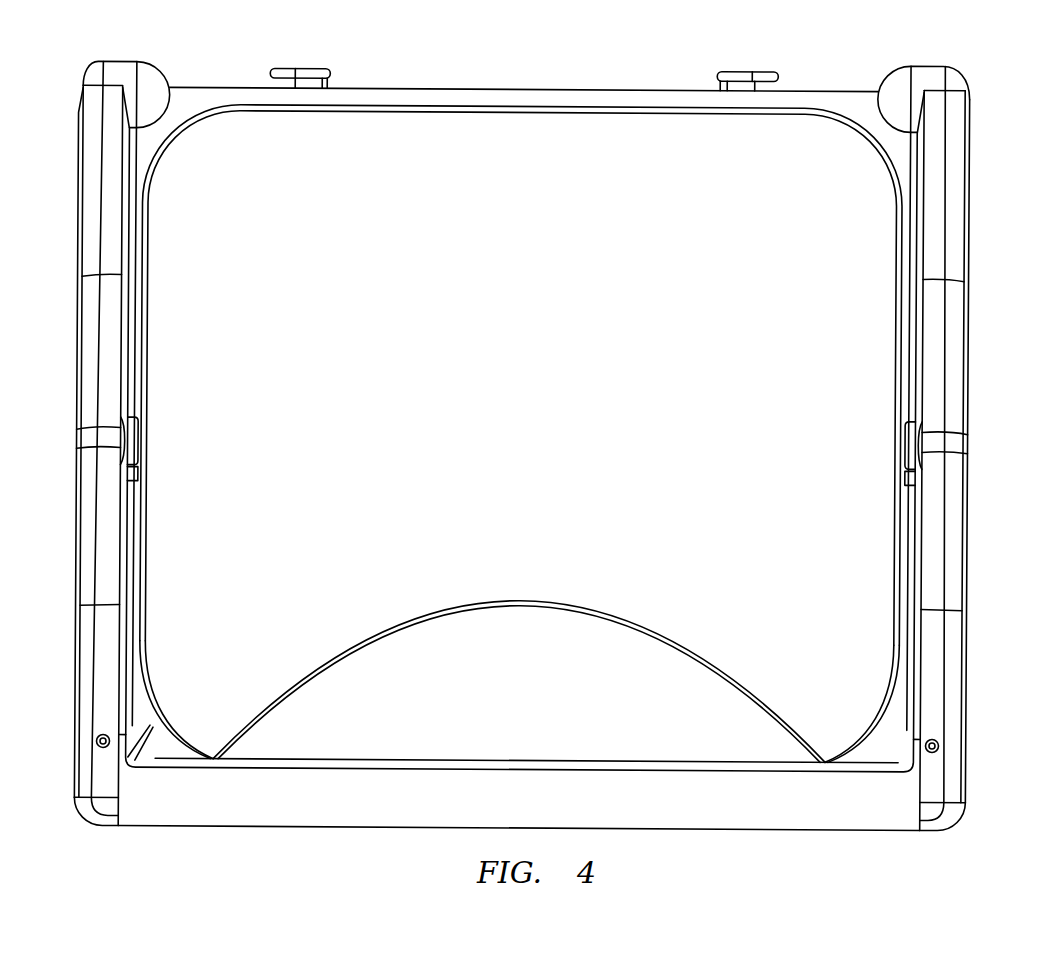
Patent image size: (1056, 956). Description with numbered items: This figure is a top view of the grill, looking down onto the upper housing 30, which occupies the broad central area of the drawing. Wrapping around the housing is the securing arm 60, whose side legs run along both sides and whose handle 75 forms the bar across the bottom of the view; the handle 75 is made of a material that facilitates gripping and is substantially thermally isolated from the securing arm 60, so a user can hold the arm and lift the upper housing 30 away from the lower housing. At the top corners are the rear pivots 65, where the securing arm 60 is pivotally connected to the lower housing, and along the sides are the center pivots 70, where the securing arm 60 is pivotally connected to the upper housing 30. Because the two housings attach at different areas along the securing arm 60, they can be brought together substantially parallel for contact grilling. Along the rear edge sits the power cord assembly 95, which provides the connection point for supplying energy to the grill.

The upper housing 30 is at (847, 302).
The securing arm 60 is at (938, 653).
The rear pivots 65 is at (898, 88).
The center pivots 70 is at (910, 443).
The handle 75 is at (807, 805).
The power cord assembly 95 is at (743, 75).